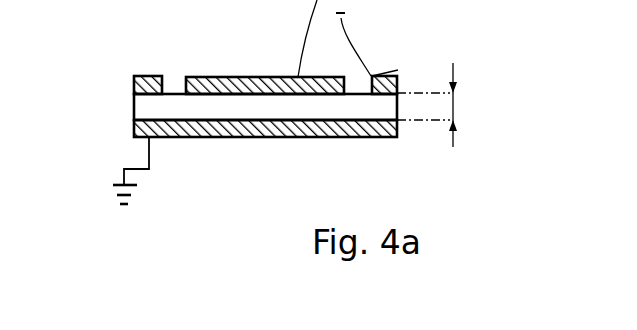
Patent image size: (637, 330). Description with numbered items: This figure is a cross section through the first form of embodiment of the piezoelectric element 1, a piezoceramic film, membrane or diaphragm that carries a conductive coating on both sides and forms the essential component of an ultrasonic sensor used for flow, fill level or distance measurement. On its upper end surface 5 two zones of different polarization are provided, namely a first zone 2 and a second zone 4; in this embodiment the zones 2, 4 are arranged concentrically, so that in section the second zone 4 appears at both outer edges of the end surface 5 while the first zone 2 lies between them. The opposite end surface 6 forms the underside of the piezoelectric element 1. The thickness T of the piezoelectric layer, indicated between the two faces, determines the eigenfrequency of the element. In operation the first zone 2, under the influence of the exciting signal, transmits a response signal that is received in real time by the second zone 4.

The piezoelectric element 1 is at (237, 158).
The first zone 2 is at (218, 80).
The second zone 4 is at (148, 80).
The end surface 5 is at (398, 70).
The end surface 6 is at (352, 138).
The thickness T is at (433, 105).